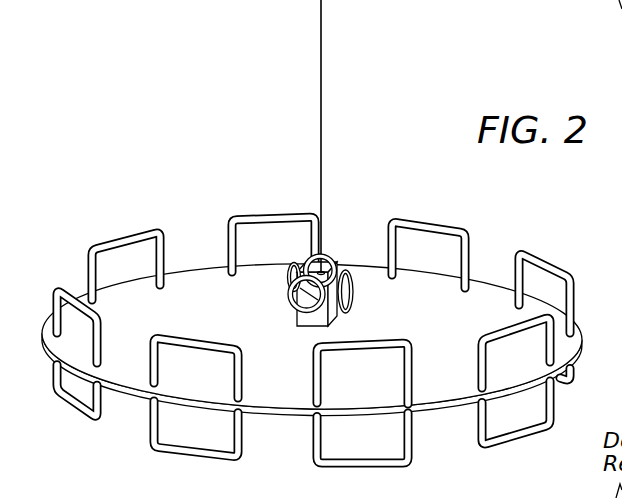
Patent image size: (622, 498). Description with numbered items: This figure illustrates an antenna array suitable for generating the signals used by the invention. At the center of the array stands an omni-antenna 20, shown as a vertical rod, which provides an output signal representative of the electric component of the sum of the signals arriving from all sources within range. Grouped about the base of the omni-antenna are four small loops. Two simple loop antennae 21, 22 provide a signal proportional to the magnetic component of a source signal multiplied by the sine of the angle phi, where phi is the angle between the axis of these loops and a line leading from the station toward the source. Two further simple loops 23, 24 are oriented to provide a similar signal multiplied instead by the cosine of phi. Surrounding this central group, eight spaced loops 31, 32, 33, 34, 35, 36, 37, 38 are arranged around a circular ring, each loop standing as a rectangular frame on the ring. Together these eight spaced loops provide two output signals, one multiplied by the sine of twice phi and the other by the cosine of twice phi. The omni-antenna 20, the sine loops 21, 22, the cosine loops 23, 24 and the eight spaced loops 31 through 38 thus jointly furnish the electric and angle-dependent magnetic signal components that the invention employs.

The omni-antenna 20 is at (323, 68).
The loop antenna 21 is at (355, 304).
The loop antenna 22 is at (290, 276).
The loop 23 is at (295, 302).
The loop 24 is at (330, 258).
The spaced loop 31 is at (573, 283).
The spaced loop 32 is at (229, 231).
The spaced loop 33 is at (53, 372).
The spaced loop 34 is at (315, 448).
The spaced loop 35 is at (463, 250).
The spaced loop 36 is at (88, 258).
The spaced loop 37 is at (152, 427).
The spaced loop 38 is at (480, 433).